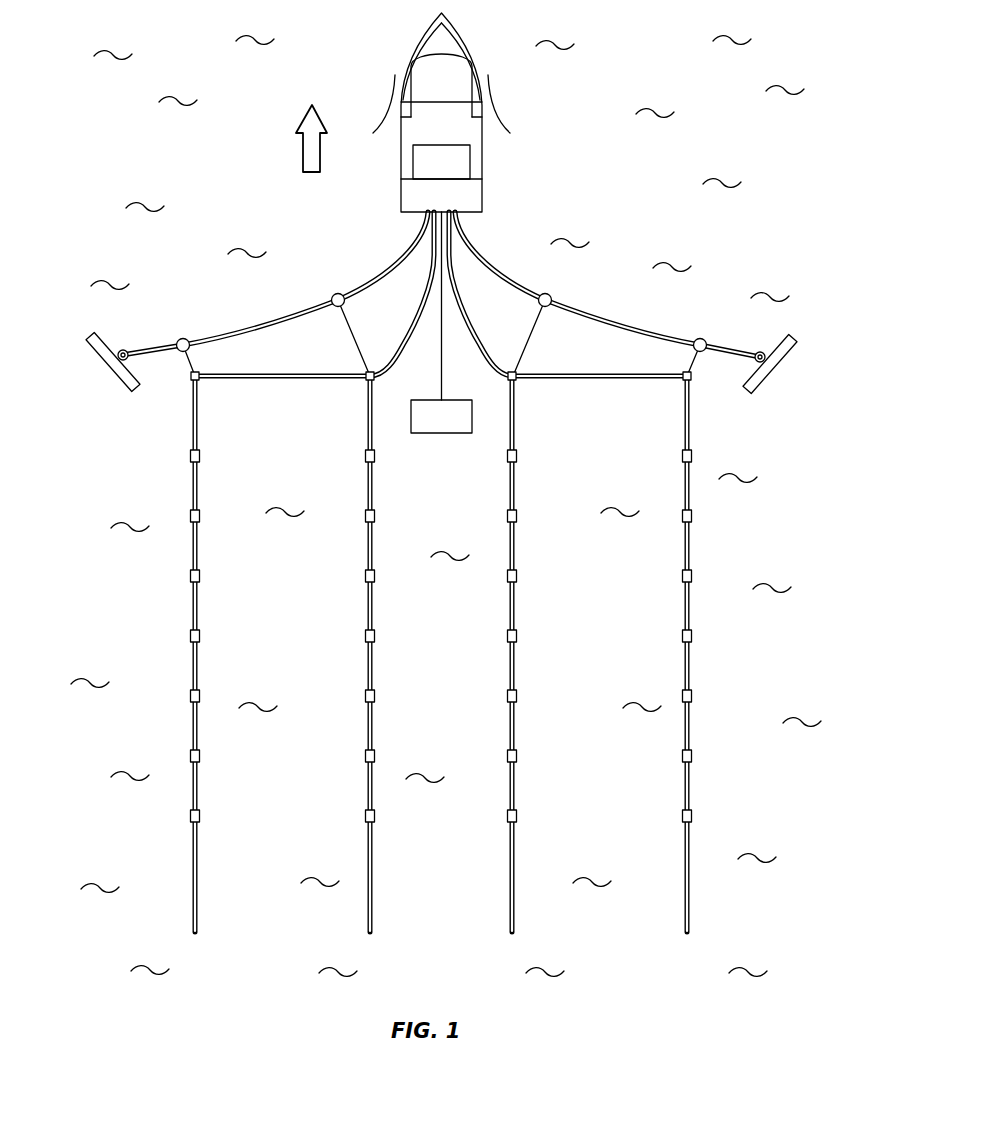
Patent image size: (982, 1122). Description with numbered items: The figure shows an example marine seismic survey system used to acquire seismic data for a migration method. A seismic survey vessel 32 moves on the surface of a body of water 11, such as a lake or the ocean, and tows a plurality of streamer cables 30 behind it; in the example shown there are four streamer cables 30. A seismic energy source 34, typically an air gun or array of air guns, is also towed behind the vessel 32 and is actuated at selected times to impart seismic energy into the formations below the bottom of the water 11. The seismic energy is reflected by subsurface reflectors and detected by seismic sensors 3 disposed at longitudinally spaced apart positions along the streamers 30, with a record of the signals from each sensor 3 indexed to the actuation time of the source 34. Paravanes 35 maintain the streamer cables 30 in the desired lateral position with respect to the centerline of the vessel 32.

The seismic sensor 3 is at (190, 455).
The body of water 11 is at (654, 236).
The streamer cable 30 is at (199, 668).
The seismic survey vessel 32 is at (482, 170).
The seismic energy source 34 is at (438, 433).
The paravane 35 is at (108, 368).